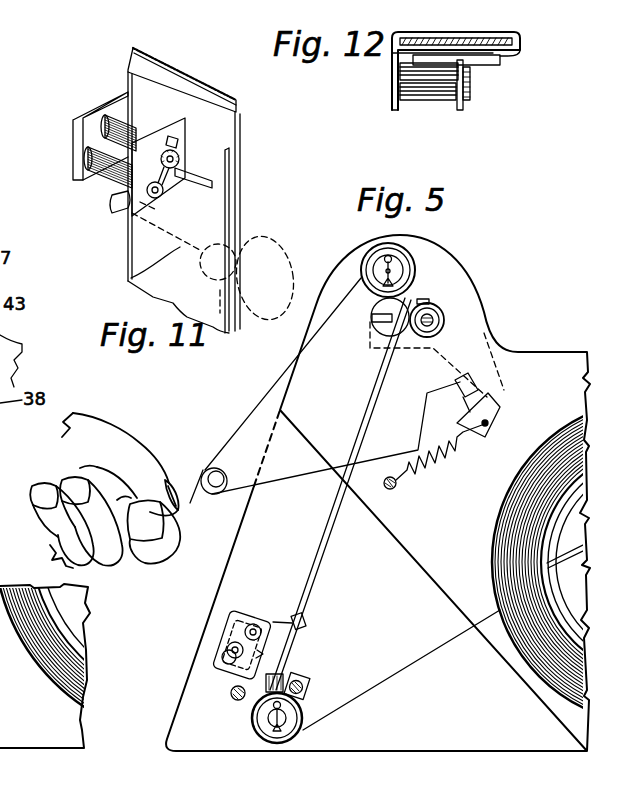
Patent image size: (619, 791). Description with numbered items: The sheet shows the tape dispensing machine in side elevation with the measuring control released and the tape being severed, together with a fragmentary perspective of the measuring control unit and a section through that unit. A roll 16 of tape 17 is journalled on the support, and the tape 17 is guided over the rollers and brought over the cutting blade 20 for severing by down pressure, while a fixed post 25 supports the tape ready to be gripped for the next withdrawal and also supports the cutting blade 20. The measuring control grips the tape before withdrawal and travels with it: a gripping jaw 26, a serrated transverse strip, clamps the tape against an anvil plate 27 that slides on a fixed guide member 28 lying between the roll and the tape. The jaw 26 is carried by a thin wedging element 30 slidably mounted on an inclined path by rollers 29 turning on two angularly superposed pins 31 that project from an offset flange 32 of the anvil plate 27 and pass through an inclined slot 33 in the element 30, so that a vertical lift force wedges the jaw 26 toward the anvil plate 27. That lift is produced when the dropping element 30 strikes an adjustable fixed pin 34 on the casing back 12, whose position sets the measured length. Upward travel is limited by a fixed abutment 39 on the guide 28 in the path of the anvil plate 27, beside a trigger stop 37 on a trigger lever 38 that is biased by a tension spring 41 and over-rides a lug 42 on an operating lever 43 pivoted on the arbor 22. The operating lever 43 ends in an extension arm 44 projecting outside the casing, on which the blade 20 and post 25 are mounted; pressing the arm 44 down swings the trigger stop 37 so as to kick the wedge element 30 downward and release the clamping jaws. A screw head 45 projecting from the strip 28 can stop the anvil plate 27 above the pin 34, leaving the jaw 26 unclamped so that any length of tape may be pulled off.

In FIG. 12, the back 12 is at (259, 128).
In FIG. 11, the back 12 is at (262, 118).
In FIG. 5, the roll 16 is at (502, 521).
In FIG. 5, the tape 17 is at (445, 644).
In FIG. 5, the cutting blade 20 is at (206, 496).
In FIG. 5, the arbor 22 is at (392, 276).
In FIG. 5, the post 25 is at (221, 477).
In FIG. 12, the gripping jaw 26 is at (490, 67).
In FIG. 11, the gripping jaw 26 is at (213, 183).
In FIG. 12, the anvil plate 27 is at (505, 56).
In FIG. 11, the anvil plate 27 is at (174, 167).
In FIG. 12, the guide member 28 is at (460, 42).
In FIG. 11, the guide member 28 is at (131, 248).
In FIG. 5, the guide member 28 is at (325, 551).
In FIG. 12, the rollers 29 is at (470, 80).
In FIG. 11, the rollers 29 is at (180, 158).
In FIG. 12, the wedging element 30 is at (464, 107).
In FIG. 11, the wedging element 30 is at (140, 205).
In FIG. 12, the pins 31 is at (442, 100).
In FIG. 11, the pins 31 is at (102, 129).
In FIG. 12, the offset flange 32 is at (392, 80).
In FIG. 11, the offset flange 32 is at (88, 115).
In FIG. 11, the slot 33 is at (107, 180).
In FIG. 11, the fixed pin 34 is at (131, 277).
In FIG. 5, the fixed pin 34 is at (233, 698).
In FIG. 5, the trigger stop 37 is at (388, 300).
In FIG. 5, the trigger lever 38 is at (490, 410).
In FIG. 5, the abutment 39 is at (415, 302).
In FIG. 5, the tension spring 41 is at (433, 467).
In FIG. 5, the lug 42 is at (492, 410).
In FIG. 5, the operating lever 43 is at (457, 347).
In FIG. 5, the extension arm 44 is at (332, 386).
In FIG. 5, the screw head 45 is at (275, 663).